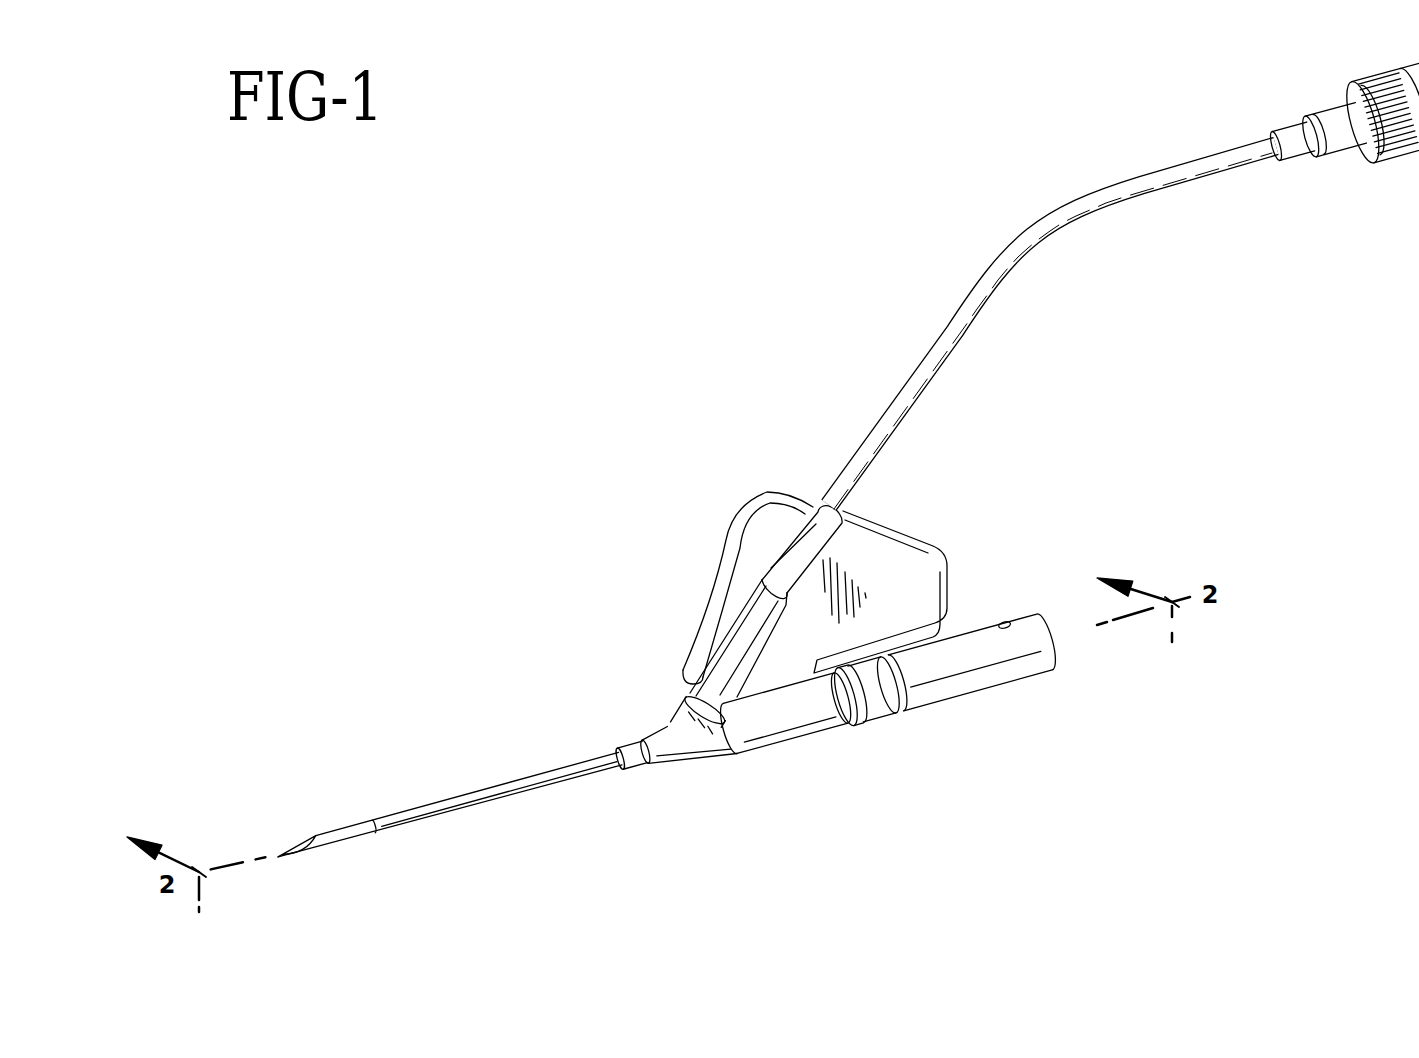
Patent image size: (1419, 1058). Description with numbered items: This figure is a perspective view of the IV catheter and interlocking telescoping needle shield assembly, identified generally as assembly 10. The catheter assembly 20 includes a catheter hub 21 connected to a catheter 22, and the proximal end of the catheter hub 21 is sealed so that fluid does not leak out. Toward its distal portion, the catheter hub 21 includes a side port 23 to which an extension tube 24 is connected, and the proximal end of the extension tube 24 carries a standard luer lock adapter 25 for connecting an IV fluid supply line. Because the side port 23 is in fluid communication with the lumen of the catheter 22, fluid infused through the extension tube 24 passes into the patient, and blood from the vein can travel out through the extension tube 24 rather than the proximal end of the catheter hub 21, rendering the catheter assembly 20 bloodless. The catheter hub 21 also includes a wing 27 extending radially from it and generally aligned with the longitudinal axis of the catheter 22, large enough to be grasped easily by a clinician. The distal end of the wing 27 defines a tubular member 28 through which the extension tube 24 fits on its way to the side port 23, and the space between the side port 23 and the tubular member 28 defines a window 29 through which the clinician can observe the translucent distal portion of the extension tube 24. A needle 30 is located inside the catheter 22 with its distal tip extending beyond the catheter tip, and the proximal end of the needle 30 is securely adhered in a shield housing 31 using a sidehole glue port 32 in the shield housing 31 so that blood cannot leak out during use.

The catheter assembly with interlocking telescopic needle shield assembly 10 is at (423, 453).
The catheter assembly 20 is at (647, 732).
The catheter hub 21 is at (777, 730).
The catheter 22 is at (452, 797).
The side port 23 is at (680, 710).
The extension tube 24 is at (943, 347).
The luer lock adapter 25 is at (1318, 108).
The wing 27 is at (877, 552).
The tubular member 28 is at (800, 533).
The window 29 is at (733, 633).
The needle 30 is at (277, 845).
The shield housing 31 is at (967, 680).
The sidehole glue port 32 is at (1003, 620).